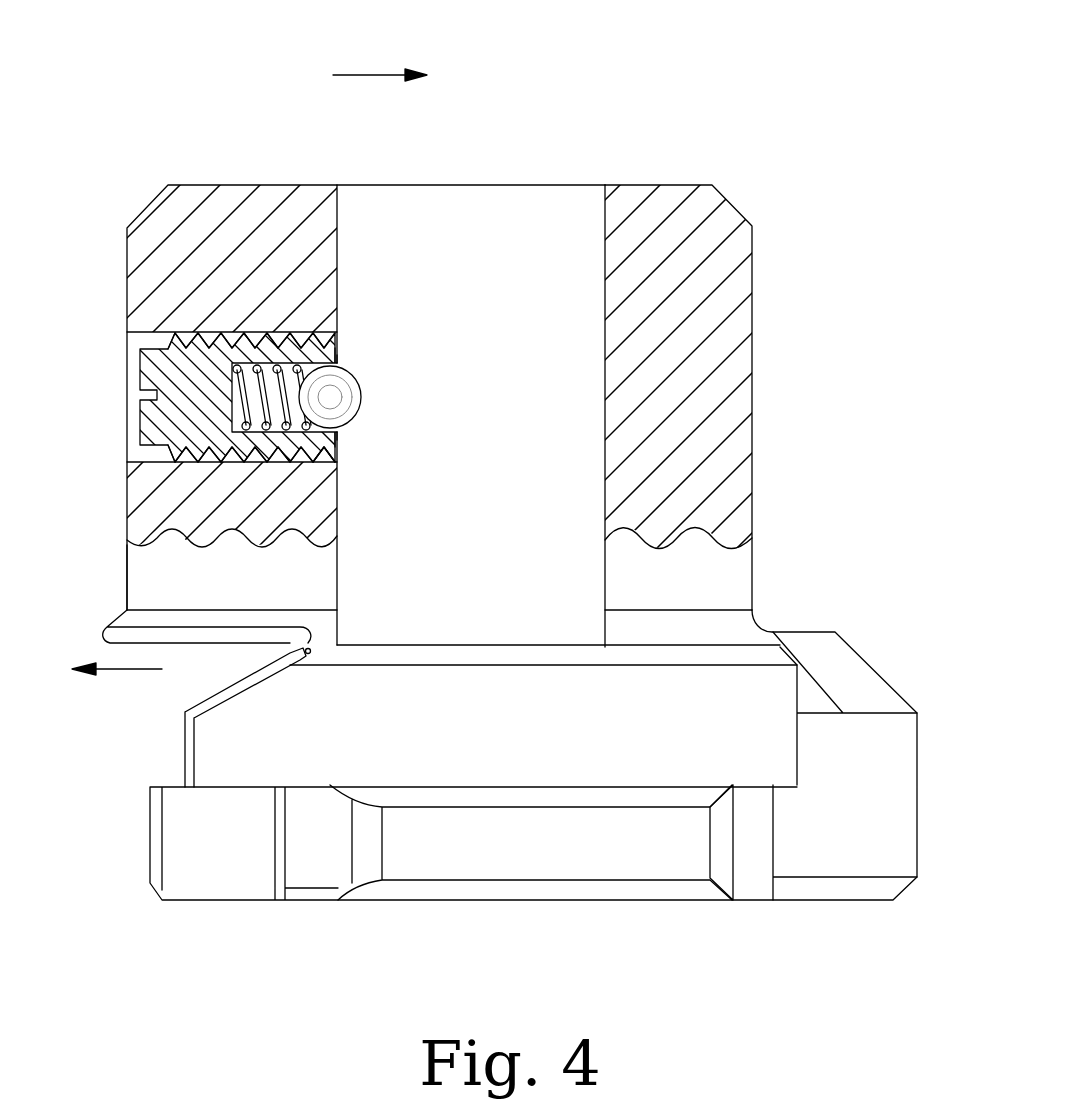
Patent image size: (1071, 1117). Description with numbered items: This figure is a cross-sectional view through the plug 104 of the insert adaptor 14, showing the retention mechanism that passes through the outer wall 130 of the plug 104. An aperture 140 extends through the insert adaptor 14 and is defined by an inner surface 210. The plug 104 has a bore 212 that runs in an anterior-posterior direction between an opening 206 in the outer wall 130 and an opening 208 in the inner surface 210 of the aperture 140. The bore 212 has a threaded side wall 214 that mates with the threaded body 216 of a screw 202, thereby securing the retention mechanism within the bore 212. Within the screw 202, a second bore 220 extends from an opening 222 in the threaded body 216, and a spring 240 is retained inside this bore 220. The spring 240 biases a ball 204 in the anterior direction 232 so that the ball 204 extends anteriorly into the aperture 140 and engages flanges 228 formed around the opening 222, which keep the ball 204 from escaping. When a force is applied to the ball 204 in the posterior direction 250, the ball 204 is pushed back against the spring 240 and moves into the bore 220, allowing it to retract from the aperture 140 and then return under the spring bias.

The insert adaptor 14 is at (680, 122).
The plug 104 is at (746, 238).
The outer wall 130 is at (130, 497).
The aperture 140 is at (543, 215).
The screw 202 is at (130, 428).
The ball 204 is at (352, 388).
The opening 206 is at (113, 402).
The opening 208 is at (358, 450).
The inner surface 210 is at (350, 198).
The bore 212 is at (350, 363).
The threaded side wall 214 is at (273, 452).
The threaded body 216 is at (208, 340).
The bore 220 is at (337, 306).
The opening 222 is at (340, 398).
The flanges 228 is at (337, 352).
The anterior direction 232 is at (373, 74).
The spring 240 is at (322, 460).
The posterior direction 250 is at (127, 670).